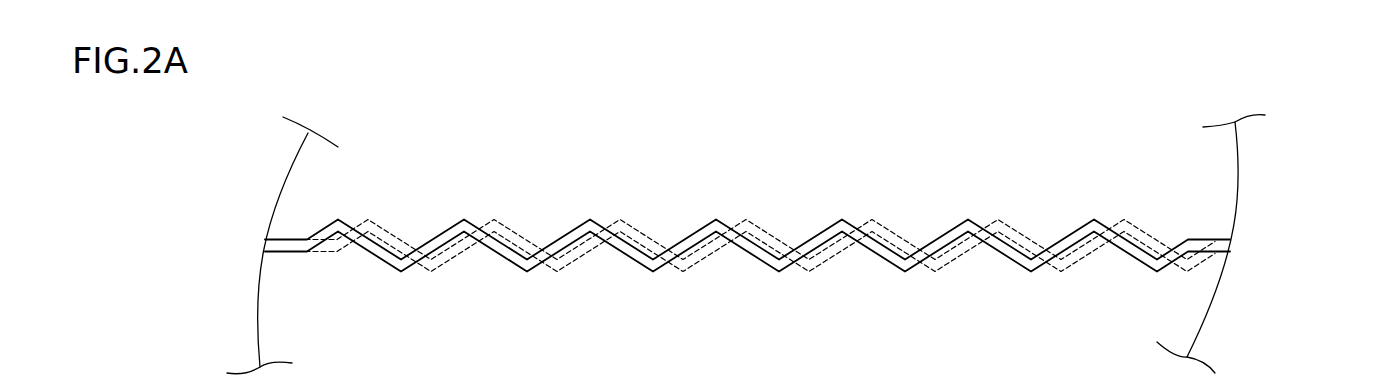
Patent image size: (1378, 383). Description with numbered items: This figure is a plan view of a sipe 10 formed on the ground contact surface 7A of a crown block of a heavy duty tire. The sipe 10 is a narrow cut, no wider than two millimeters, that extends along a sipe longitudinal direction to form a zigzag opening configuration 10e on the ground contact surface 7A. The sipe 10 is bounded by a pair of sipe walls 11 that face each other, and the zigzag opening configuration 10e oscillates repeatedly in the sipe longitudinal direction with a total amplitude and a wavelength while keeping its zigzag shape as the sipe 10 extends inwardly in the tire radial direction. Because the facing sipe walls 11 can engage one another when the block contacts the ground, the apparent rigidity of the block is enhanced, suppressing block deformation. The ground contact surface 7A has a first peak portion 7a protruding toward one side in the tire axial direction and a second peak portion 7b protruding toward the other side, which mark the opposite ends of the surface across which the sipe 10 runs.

The ground contact surface 7A is at (747, 239).
The first peak portion 7a is at (1237, 217).
The second peak portion 7b is at (258, 272).
The sipe 10 is at (740, 203).
The zigzag opening configuration 10e is at (1008, 237).
The sipe wall 11 is at (700, 230).